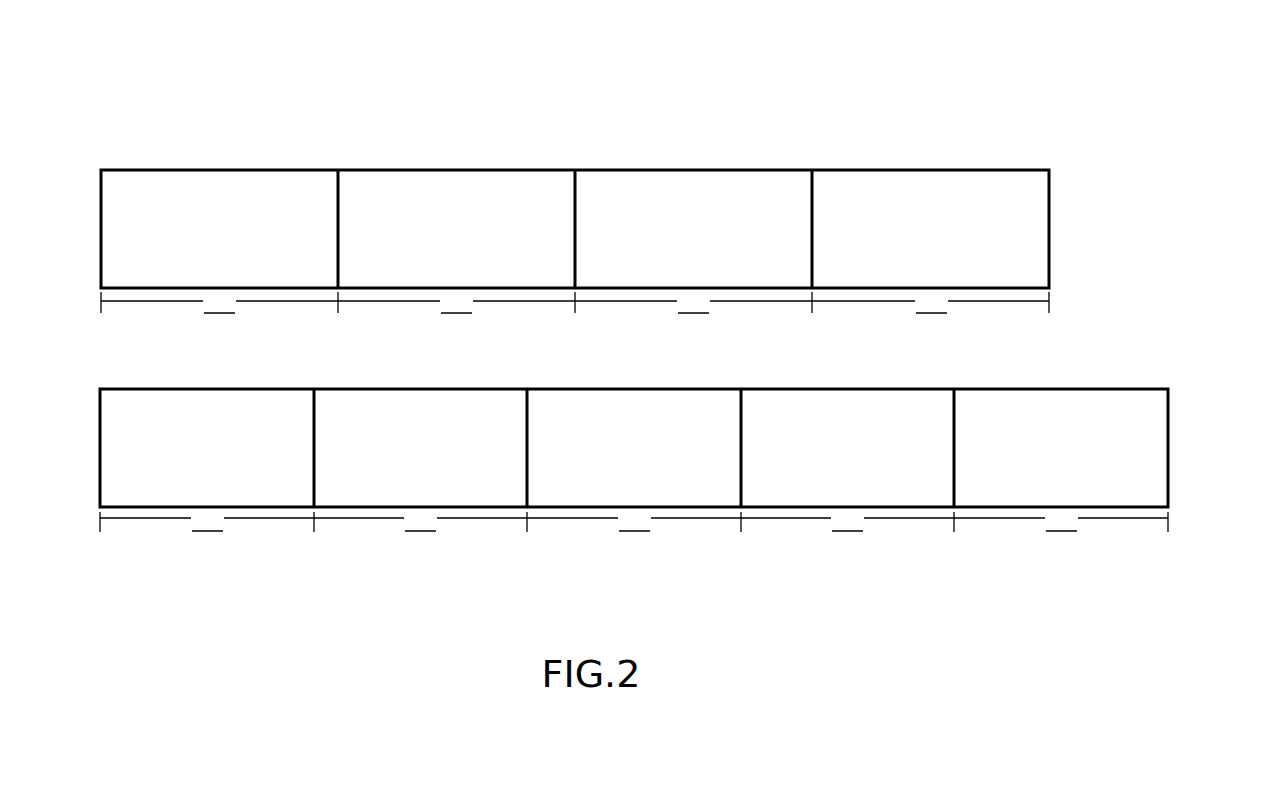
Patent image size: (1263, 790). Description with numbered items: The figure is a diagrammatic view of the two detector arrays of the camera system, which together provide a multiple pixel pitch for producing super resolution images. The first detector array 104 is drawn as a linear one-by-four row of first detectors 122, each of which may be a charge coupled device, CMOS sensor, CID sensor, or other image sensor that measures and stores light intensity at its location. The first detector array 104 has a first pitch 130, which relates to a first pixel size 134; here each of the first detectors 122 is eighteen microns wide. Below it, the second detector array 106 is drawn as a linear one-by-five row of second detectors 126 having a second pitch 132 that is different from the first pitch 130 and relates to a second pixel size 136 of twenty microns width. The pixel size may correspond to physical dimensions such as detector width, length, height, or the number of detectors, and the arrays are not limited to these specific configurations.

The first detector array 104 is at (160, 128).
The second detector array 106 is at (133, 363).
The first detector 122 is at (949, 239).
The second detector 126 is at (1079, 459).
The first pitch 130 is at (1085, 237).
The second pitch 132 is at (1173, 452).
The first pixel size 134 is at (1051, 304).
The second pixel size 136 is at (1170, 524).